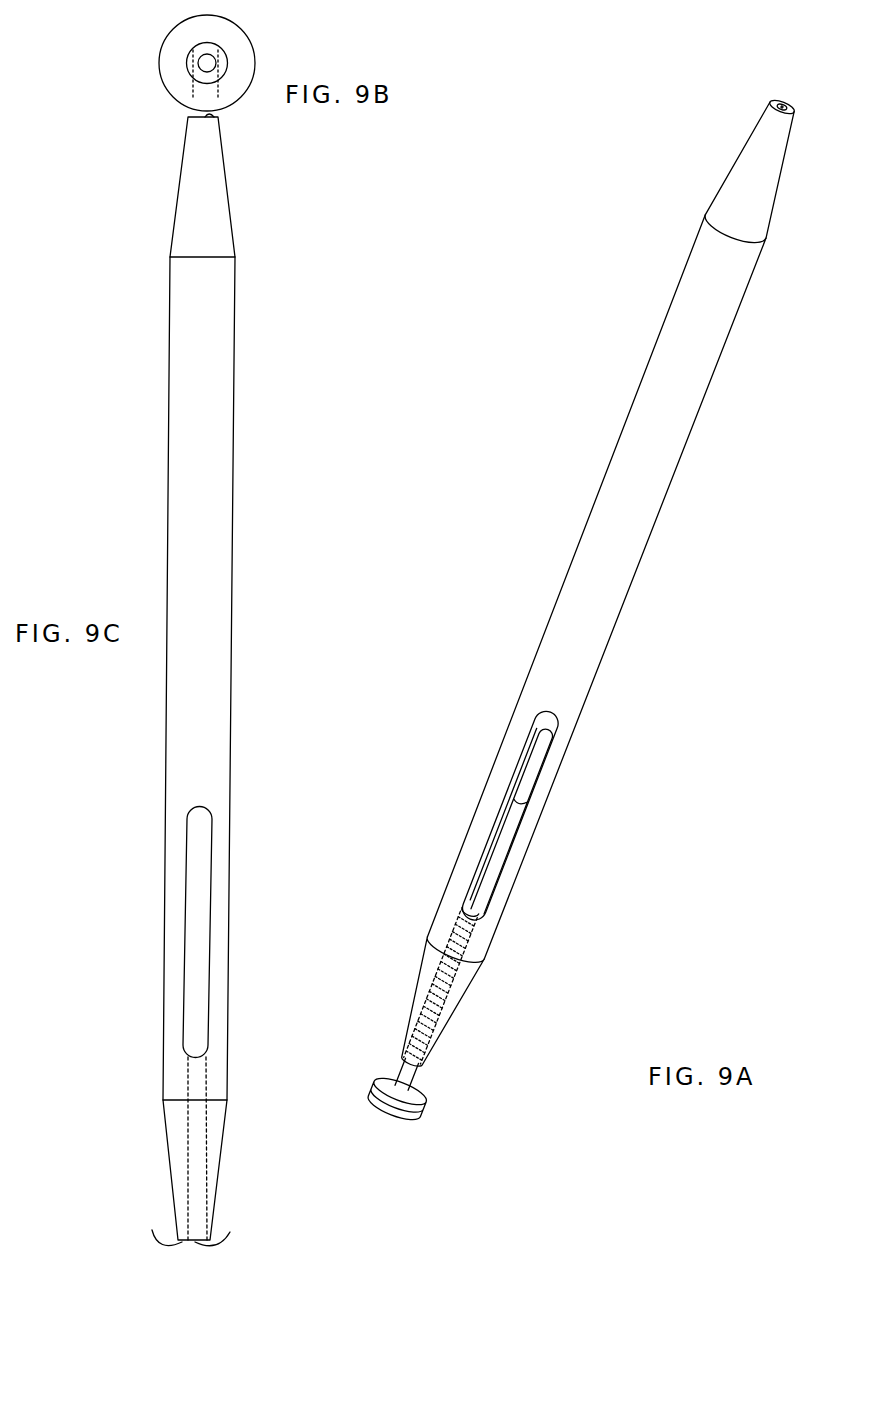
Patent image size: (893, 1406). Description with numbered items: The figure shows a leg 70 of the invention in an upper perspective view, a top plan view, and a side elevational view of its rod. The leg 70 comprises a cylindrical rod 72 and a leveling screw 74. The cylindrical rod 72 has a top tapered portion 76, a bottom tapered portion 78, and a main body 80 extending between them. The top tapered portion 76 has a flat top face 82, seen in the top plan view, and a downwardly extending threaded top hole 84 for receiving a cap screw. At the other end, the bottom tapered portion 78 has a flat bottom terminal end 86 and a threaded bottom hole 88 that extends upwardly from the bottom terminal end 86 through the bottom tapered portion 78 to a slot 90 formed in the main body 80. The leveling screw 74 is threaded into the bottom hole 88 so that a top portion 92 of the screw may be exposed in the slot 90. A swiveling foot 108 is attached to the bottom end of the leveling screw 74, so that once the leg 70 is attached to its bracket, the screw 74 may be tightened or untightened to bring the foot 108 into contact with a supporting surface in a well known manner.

In FIG. 9A, the leg 70 is at (528, 383).
In FIG. 9A, the cylindrical rod 72 is at (705, 474).
In FIG. 9A, the leveling screw 74 is at (445, 1074).
In FIG. 9B, the top tapered portion 76 is at (237, 55).
In FIG. 9C, the top tapered portion 76 is at (230, 202).
In FIG. 9A, the top tapered portion 76 is at (780, 184).
In FIG. 9C, the bottom tapered portion 78 is at (217, 1167).
In FIG. 9A, the bottom tapered portion 78 is at (463, 1008).
In FIG. 9C, the main body 80 is at (233, 548).
In FIG. 9A, the main body 80 is at (563, 585).
In FIG. 9B, the flat top face 82 is at (198, 56).
In FIG. 9C, the flat top face 82 is at (212, 117).
In FIG. 9A, the flat top face 82 is at (777, 100).
In FIG. 9B, the threaded top hole 84 is at (202, 64).
In FIG. 9A, the threaded top hole 84 is at (784, 104).
In FIG. 9C, the bottom terminal end 86 is at (155, 1227).
In FIG. 9C, the threaded bottom hole 88 is at (207, 1073).
In FIG. 9A, the threaded bottom hole 88 is at (437, 986).
In FIG. 9C, the slot 90 is at (200, 860).
In FIG. 9A, the slot 90 is at (539, 738).
In FIG. 9A, the top portion 92 is at (505, 823).
In FIG. 9A, the swiveling foot 108 is at (424, 1112).